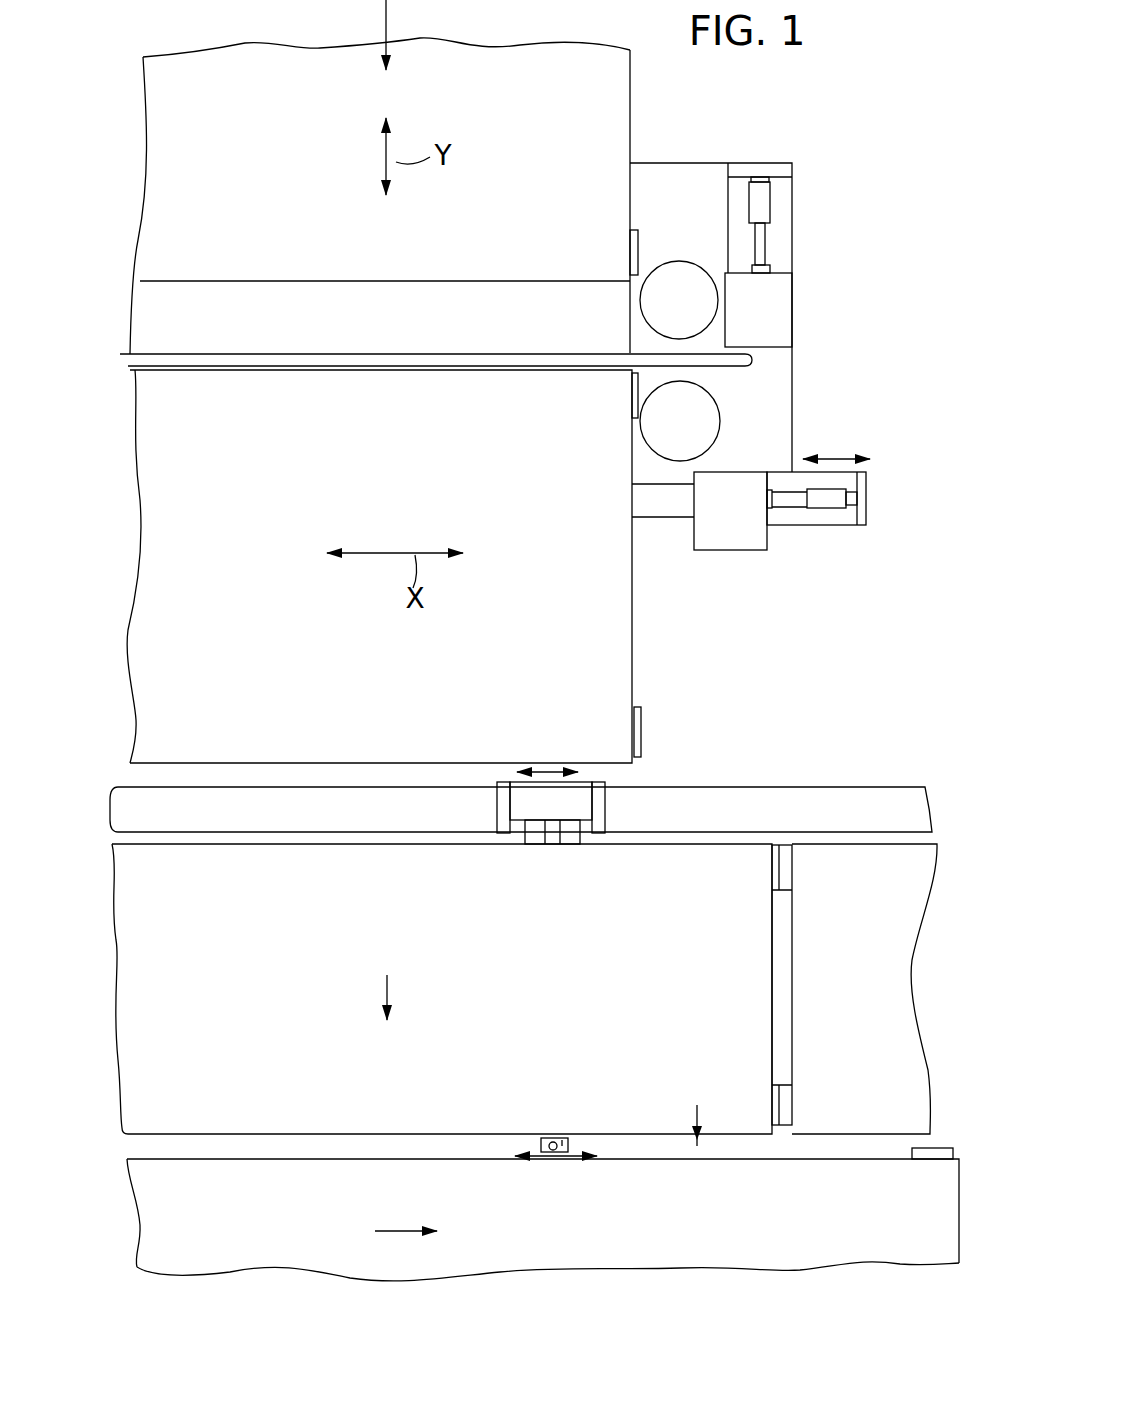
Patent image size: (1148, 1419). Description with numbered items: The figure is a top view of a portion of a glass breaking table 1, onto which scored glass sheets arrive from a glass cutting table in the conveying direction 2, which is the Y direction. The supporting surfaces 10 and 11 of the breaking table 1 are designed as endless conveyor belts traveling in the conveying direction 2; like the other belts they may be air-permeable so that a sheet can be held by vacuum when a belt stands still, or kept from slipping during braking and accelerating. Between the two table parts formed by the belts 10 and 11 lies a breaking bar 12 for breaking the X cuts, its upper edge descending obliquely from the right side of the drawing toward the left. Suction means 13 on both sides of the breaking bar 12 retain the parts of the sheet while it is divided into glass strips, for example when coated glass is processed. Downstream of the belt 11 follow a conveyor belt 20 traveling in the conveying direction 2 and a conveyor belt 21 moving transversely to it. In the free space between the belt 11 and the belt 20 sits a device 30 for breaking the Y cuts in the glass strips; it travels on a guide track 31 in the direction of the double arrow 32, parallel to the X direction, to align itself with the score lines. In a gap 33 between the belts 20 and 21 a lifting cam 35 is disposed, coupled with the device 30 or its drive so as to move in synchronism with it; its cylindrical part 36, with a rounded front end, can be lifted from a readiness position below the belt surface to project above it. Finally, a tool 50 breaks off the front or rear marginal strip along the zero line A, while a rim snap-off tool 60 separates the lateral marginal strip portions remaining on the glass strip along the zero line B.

The breaking table 1 is at (122, 310).
The conveying direction 2 is at (386, 22).
The supporting surface 10 is at (620, 96).
The supporting surface 11 is at (617, 612).
The breaking bar 12 is at (758, 362).
The suction means 13 is at (670, 270).
The conveyor belt 20 is at (142, 993).
The conveyor belt 21 is at (155, 1250).
The device for dividing glass strips 30 is at (573, 808).
The guide track 31 is at (772, 808).
The double arrow 32 is at (548, 768).
The gap 33 is at (697, 1109).
The lifting cam 35 is at (562, 1140).
The part of lifting cam 36 is at (553, 1140).
The tool 50 is at (800, 277).
The rim snap-off tool 60 is at (782, 535).